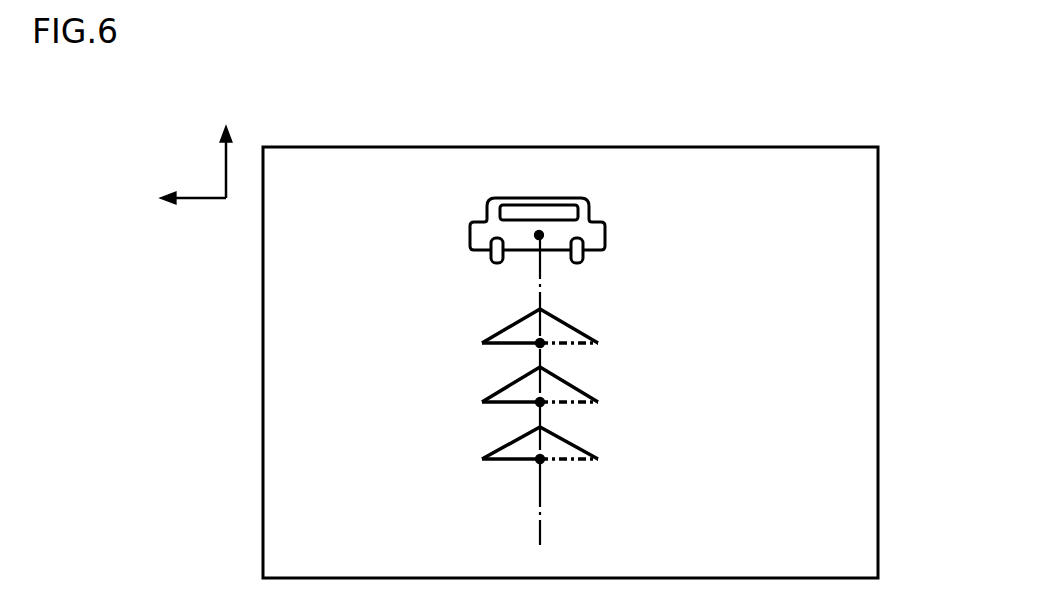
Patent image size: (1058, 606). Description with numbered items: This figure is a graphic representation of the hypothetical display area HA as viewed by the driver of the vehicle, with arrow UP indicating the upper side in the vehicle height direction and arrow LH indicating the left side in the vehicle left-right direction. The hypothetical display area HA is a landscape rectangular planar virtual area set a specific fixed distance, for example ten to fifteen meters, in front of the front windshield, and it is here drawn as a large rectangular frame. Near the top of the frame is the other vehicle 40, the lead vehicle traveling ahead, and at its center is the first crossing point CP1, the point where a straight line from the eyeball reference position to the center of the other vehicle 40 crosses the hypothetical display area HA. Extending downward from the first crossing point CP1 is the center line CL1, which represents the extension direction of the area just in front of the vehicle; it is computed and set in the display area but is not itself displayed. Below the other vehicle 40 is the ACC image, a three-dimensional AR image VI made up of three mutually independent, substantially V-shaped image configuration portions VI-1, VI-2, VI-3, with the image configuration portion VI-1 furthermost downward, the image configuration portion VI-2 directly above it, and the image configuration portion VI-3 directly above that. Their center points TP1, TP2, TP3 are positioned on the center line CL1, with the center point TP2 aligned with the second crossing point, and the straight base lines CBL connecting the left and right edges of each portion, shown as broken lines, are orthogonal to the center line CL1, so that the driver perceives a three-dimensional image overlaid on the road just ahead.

The hypothetical display area HA is at (823, 146).
The other vehicle 40 is at (606, 238).
The first crossing point CP1 is at (541, 234).
The center line CL1 is at (542, 508).
The AR image VI is at (598, 398).
The image configuration portion VI-1 is at (509, 446).
The image configuration portion VI-2 is at (514, 389).
The image configuration portion VI-3 is at (516, 326).
The base line CBL is at (593, 347).
The center point TP1 is at (541, 461).
The center point TP2 is at (541, 404).
The center point TP3 is at (541, 341).
The arrow UP is at (225, 147).
The arrow LH is at (171, 199).